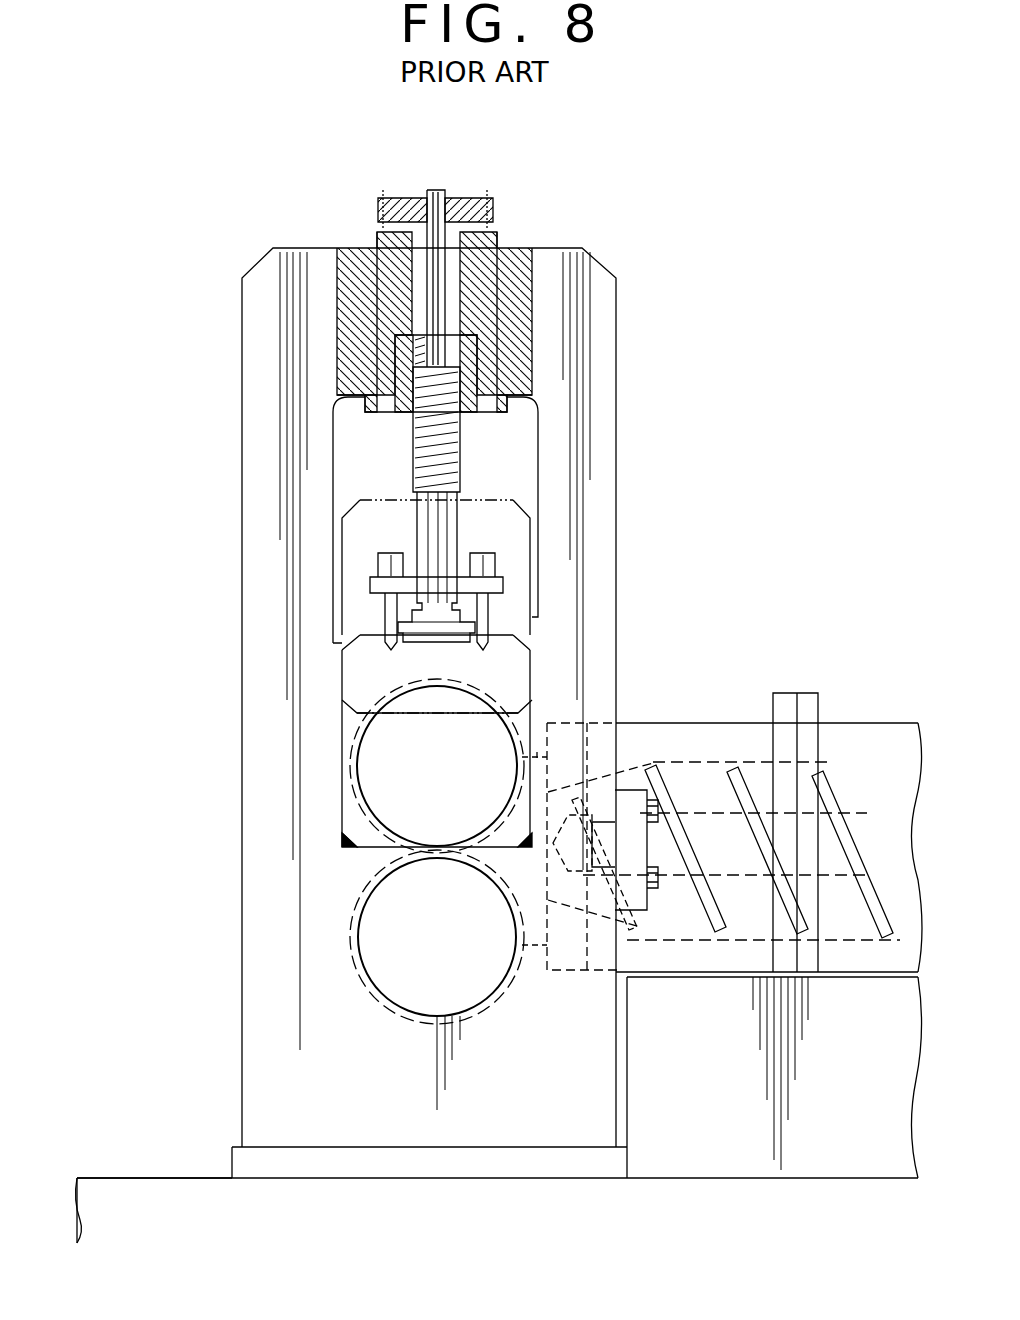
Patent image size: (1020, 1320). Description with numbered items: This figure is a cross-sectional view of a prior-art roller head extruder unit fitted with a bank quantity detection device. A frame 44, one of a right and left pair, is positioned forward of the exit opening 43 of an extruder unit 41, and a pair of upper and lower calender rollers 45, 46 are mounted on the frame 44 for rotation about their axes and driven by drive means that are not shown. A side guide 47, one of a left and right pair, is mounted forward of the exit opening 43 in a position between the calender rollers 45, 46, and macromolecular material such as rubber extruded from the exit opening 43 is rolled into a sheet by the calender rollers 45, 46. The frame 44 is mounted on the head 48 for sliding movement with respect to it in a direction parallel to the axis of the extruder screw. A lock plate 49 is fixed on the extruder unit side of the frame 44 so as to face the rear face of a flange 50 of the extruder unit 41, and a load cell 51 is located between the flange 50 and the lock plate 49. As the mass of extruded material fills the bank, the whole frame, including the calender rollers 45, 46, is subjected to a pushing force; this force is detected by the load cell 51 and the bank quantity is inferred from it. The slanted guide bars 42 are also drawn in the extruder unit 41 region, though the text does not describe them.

The extruder unit 41 is at (748, 737).
The guide bars 42 is at (730, 768).
The exit opening 43 is at (602, 820).
The frame 44 is at (607, 378).
The upper calender roller 45 is at (378, 772).
The lower calender roller 46 is at (382, 937).
The side guide 47 is at (545, 785).
The head 48 is at (145, 1193).
The lock plate 49 is at (638, 897).
The flange 50 is at (612, 930).
The load cell 51 is at (615, 760).